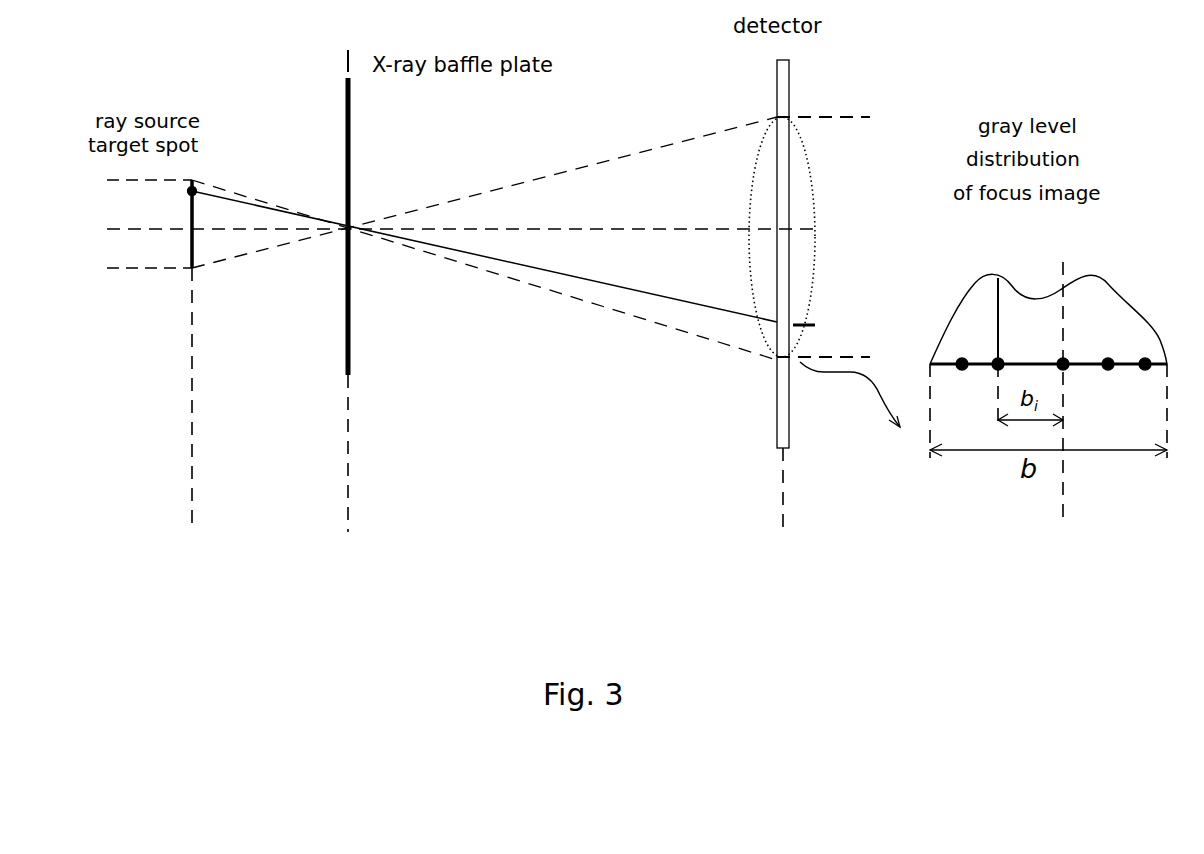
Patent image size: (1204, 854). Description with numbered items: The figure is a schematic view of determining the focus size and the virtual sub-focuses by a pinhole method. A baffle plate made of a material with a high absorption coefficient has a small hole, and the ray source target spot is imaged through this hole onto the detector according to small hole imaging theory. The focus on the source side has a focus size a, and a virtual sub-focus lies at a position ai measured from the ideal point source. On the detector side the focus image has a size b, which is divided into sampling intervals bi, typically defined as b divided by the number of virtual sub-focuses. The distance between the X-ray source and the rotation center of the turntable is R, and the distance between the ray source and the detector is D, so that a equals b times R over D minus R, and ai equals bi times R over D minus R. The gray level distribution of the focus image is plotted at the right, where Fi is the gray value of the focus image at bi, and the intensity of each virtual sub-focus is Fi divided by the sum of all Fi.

The focus size a is at (111, 180).
The virtual sub-focus position ai is at (140, 191).
The focus image size b is at (863, 117).
The sampling interval of the virtual sub-focus bi is at (802, 229).
The distance between the ray source and the detector D is at (777, 457).
The distance between the X-ray source and the rotation center R is at (348, 497).
The gray value of the focus image Fi is at (1048, 295).